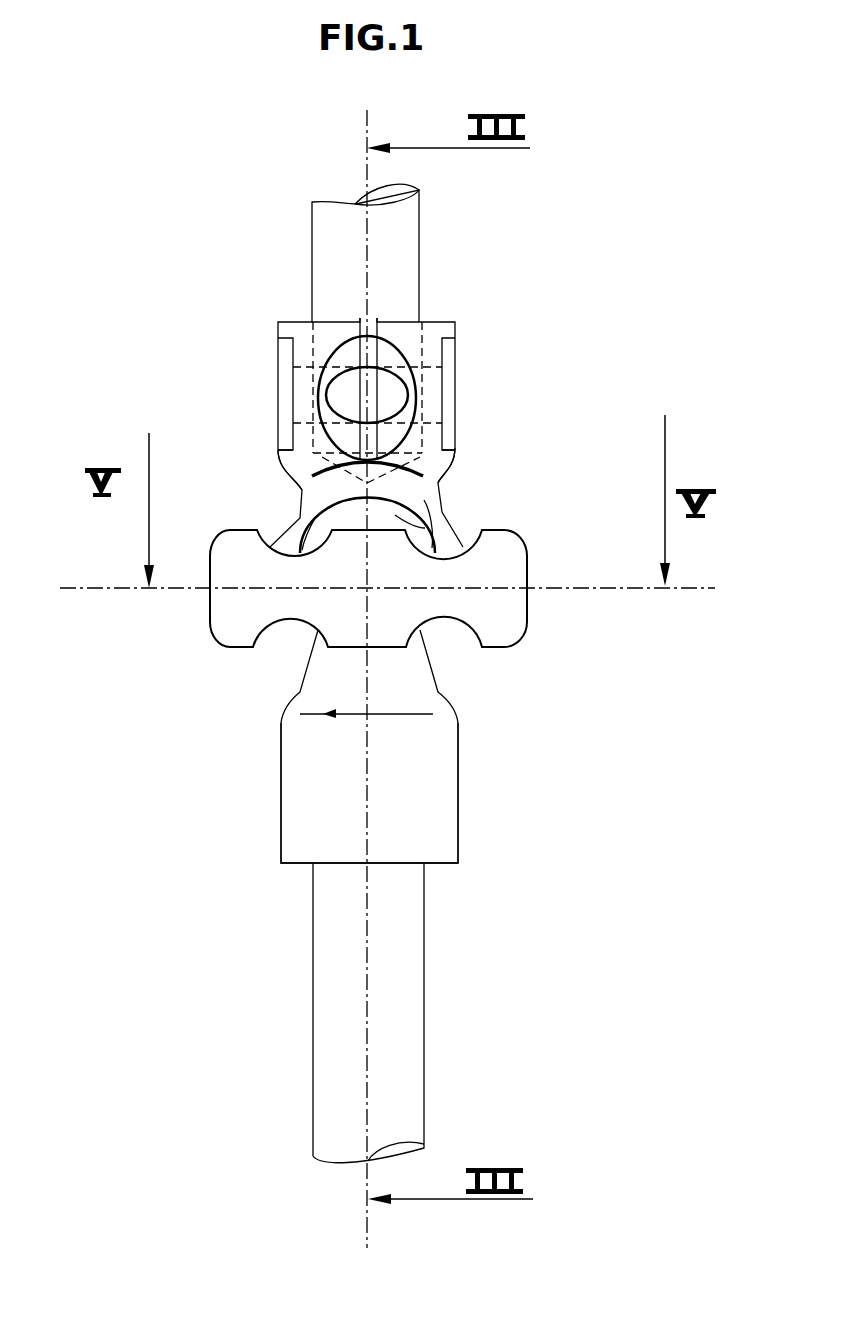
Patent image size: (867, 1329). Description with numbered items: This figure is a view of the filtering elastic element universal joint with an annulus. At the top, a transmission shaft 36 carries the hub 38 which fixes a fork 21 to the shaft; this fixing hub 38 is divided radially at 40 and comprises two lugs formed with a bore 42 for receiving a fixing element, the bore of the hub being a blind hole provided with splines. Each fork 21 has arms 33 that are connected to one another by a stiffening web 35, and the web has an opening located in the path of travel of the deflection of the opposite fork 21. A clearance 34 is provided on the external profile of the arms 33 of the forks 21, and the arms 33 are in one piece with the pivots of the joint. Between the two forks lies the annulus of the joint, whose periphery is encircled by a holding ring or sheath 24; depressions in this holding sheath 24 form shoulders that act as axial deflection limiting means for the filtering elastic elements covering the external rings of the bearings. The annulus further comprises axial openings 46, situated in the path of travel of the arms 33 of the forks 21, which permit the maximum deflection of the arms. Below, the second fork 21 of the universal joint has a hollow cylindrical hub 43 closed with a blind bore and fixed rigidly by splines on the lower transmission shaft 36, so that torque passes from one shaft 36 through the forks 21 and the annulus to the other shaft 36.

The fork 21 is at (440, 515).
The holding ring or sheath 24 is at (525, 567).
The arm 33 is at (293, 520).
The clearance 34 is at (300, 487).
The stiffening web 35 is at (470, 533).
The transmission shaft 36 is at (410, 287).
The hub 38 is at (447, 322).
The radial division 40 is at (363, 320).
The bore 42 is at (432, 410).
The hollow cylindrical hub 43 is at (292, 800).
The axial opening 46 is at (395, 515).